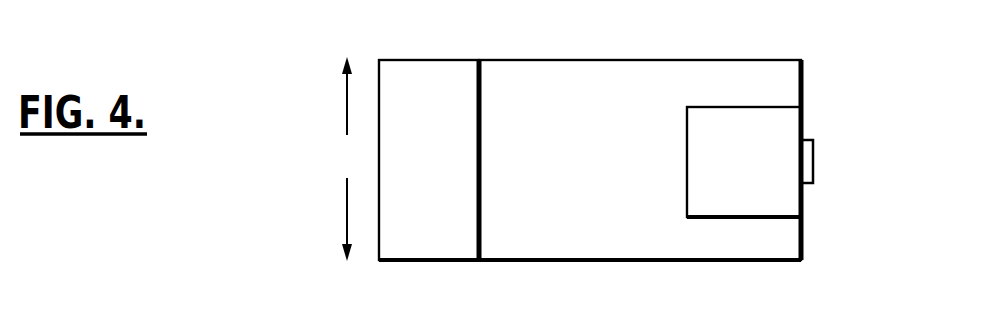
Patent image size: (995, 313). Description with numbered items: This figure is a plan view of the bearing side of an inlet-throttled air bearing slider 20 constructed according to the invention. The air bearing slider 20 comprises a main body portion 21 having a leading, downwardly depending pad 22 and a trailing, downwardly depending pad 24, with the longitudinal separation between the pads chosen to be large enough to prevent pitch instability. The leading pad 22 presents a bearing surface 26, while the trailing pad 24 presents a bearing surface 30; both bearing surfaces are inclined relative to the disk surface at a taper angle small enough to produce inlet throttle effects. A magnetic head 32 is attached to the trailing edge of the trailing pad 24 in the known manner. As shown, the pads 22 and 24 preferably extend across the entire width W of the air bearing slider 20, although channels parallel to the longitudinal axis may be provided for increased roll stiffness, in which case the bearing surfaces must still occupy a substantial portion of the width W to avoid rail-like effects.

The air bearing slider 20 is at (682, 50).
The main body portion 21 is at (592, 101).
The leading pad 22 is at (422, 80).
The trailing pad 24 is at (763, 106).
The bearing surface 26 is at (440, 154).
The bearing surface 30 is at (757, 157).
The magnetic head 32 is at (816, 160).
The width W is at (349, 159).